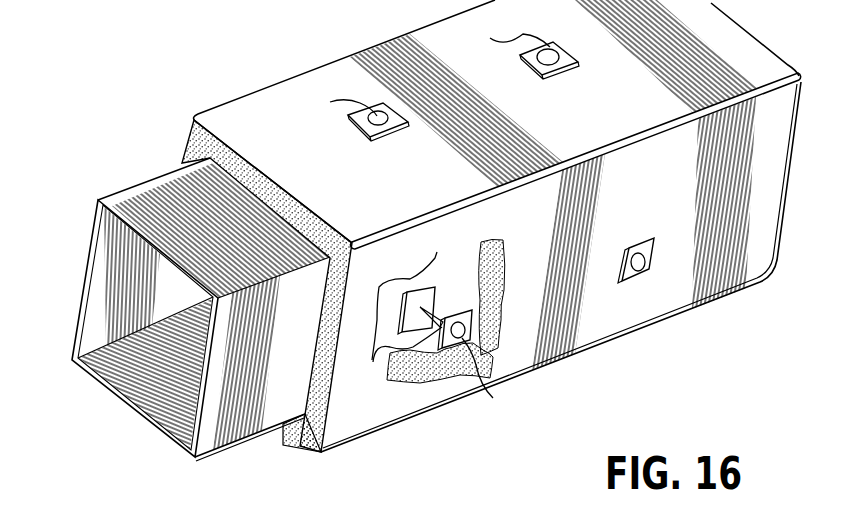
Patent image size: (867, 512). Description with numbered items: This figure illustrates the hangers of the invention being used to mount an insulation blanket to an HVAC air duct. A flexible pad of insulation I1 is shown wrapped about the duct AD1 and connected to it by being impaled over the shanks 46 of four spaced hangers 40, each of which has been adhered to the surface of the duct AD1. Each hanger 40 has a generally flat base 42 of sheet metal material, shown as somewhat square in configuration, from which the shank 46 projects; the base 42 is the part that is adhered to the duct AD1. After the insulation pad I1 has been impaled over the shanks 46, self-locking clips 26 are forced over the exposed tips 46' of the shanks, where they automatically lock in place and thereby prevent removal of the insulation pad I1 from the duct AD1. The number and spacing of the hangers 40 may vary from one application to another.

The flexible pad of insulation I1 is at (197, 147).
The HVAC air duct AD1 is at (108, 276).
The self-locking clip 26 is at (383, 136).
The exposed tip of shank 46' is at (430, 215).
The shank 46 is at (397, 316).
The hanger 40 is at (412, 284).
The base 42 is at (433, 286).